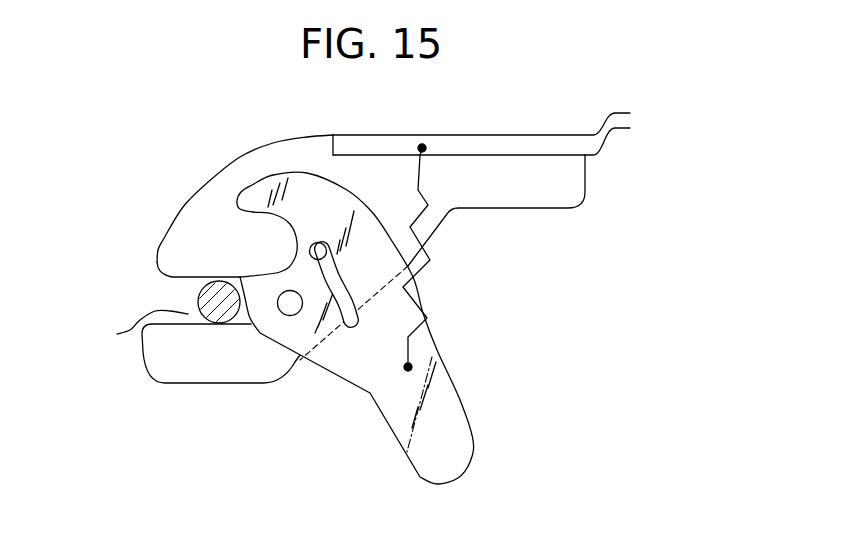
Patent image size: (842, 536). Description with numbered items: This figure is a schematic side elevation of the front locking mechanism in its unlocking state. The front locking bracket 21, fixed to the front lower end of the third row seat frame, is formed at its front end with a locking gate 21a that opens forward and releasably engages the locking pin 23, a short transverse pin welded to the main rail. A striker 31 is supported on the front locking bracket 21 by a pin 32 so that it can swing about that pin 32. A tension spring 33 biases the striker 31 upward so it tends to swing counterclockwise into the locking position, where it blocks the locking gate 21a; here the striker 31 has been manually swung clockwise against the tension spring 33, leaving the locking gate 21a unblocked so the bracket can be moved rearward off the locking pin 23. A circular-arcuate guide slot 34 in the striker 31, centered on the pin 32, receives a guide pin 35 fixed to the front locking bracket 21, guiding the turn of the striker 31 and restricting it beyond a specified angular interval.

The front locking bracket 21 is at (217, 348).
The locking gate 21a is at (126, 329).
The locking pin 23 is at (202, 307).
The striker 31 is at (432, 418).
The pin 32 is at (289, 315).
The tension spring 33 is at (427, 195).
The guide slot 34 is at (347, 277).
The guide pin 35 is at (323, 246).